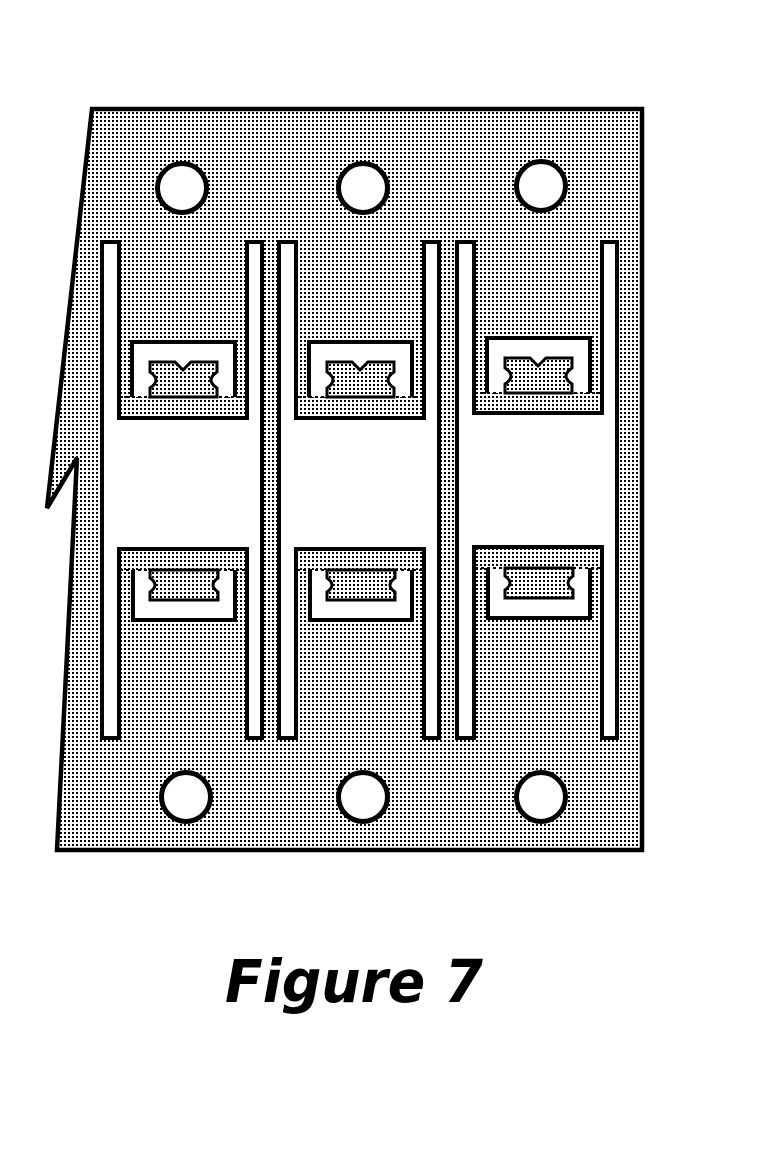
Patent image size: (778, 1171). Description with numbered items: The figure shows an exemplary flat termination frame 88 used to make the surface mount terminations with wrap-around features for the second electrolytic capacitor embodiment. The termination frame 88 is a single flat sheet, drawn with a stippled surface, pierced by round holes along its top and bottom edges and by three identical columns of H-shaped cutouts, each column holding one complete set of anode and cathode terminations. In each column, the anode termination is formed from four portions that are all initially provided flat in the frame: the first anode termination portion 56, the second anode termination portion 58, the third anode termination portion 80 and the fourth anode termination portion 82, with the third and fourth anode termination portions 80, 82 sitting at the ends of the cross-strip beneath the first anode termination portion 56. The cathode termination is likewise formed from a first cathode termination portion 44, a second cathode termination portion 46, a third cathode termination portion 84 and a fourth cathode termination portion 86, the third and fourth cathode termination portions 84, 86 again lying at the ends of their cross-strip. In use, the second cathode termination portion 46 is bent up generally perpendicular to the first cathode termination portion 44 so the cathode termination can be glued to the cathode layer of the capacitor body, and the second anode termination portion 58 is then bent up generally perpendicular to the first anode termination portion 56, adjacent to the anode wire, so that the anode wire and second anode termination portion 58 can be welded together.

The termination frame 88 is at (594, 85).
The second anode termination portion 58 is at (154, 360).
The first anode termination portion 56 is at (175, 414).
The fourth anode termination portion 82 is at (124, 414).
The third anode termination portion 80 is at (236, 414).
The fourth cathode termination portion 86 is at (140, 547).
The first cathode termination portion 44 is at (192, 547).
The third cathode termination portion 84 is at (240, 547).
The second cathode termination portion 46 is at (178, 601).